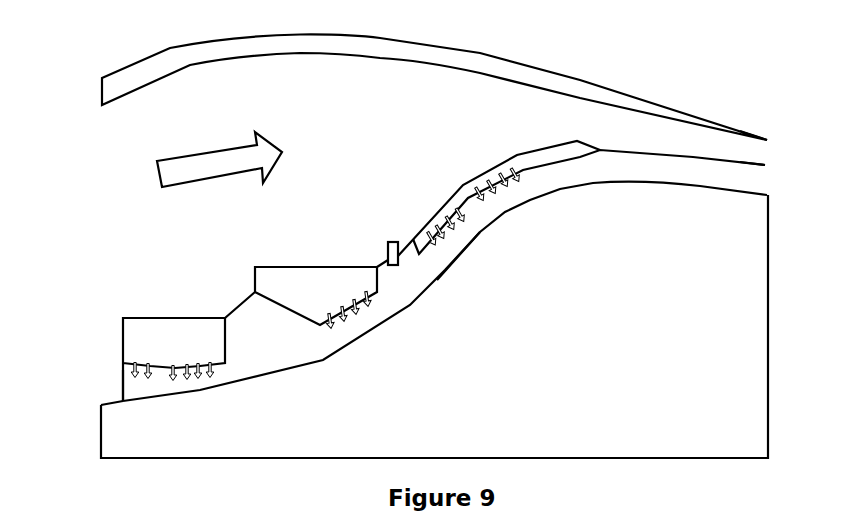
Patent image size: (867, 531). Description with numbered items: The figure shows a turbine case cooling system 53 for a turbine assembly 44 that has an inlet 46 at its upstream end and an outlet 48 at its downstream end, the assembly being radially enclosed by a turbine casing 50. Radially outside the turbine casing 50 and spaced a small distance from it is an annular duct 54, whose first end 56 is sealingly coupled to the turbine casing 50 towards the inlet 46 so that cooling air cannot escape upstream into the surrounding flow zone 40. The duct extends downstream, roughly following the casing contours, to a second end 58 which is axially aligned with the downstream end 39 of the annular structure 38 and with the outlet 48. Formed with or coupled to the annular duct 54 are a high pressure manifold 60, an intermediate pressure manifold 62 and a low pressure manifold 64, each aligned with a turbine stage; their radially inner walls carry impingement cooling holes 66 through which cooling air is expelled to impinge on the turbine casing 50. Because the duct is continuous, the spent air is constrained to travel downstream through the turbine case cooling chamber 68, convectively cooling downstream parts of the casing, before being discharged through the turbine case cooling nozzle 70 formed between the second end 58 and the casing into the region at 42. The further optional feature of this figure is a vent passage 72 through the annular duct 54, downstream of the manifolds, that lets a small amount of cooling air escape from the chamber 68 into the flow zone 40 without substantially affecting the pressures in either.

The annular structure 38 is at (480, 53).
The downstream end of the annular structure 39 is at (766, 139).
The flow zone 40 is at (362, 122).
The exit nozzle 42 is at (774, 145).
The turbine assembly 44 is at (587, 354).
The inlet 46 is at (100, 432).
The outlet 48 is at (768, 328).
The turbine casing 50 is at (597, 185).
The turbine case cooling system 53 is at (81, 295).
The annular duct 54 is at (378, 264).
The first end of the annular duct 56 is at (123, 378).
The second end of the annular duct 58 is at (765, 166).
The high pressure manifold 60 is at (187, 353).
The intermediate pressure manifold 62 is at (333, 290).
The low pressure manifold 64 is at (560, 152).
The impingement cooling holes 66 is at (515, 198).
The turbine case cooling chamber 68 is at (421, 278).
The turbine case cooling nozzle 70 is at (769, 178).
The vent passage 72 is at (390, 242).